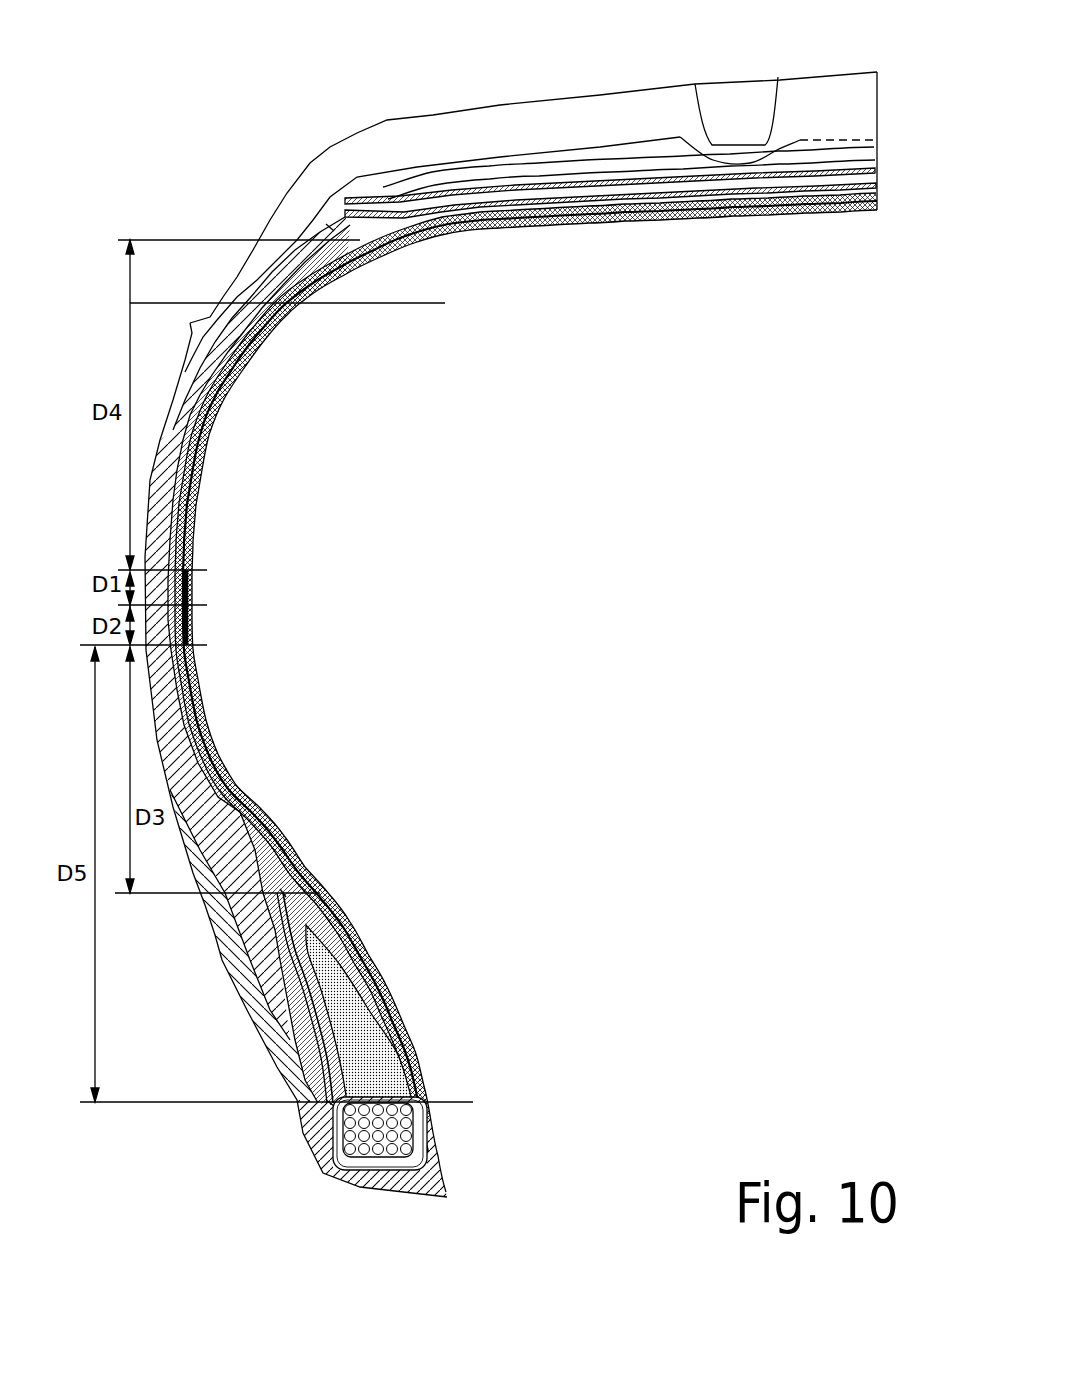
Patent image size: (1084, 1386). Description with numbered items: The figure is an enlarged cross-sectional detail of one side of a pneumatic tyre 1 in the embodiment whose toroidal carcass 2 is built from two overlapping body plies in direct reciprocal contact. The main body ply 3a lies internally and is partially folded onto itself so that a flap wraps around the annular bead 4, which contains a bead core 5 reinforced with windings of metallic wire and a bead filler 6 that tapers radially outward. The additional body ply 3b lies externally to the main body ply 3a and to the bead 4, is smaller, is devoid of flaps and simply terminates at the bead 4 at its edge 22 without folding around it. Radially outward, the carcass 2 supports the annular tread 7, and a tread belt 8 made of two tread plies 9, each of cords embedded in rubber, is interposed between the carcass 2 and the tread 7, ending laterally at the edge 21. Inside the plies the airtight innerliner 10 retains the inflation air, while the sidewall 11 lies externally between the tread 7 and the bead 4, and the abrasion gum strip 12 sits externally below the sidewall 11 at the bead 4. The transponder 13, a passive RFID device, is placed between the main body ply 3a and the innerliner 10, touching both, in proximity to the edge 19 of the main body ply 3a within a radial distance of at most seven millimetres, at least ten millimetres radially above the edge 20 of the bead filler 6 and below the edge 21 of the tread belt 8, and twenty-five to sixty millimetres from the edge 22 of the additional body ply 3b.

The pneumatic tyre 1 is at (280, 1127).
The toroidal carcass 2 is at (820, 716).
The main body ply 3a is at (850, 200).
The additional body ply 3b is at (471, 215).
The annular bead 4 is at (520, 1061).
The bead core 5 is at (380, 1130).
The bead filler 6 is at (347, 1008).
The tread 7 is at (835, 105).
The tread belt 8 is at (769, 282).
The tread ply 9 is at (847, 175).
The innerliner 10 is at (807, 212).
The sidewall 11 is at (170, 457).
The abrasion gum strip 12 is at (290, 1028).
The transponder 13 is at (188, 633).
The edge of the main body ply 19 is at (178, 605).
The edge of the bead filler 20 is at (283, 893).
The edge of the tread belt 21 is at (330, 227).
The edge of the additional body ply 22 is at (330, 1103).